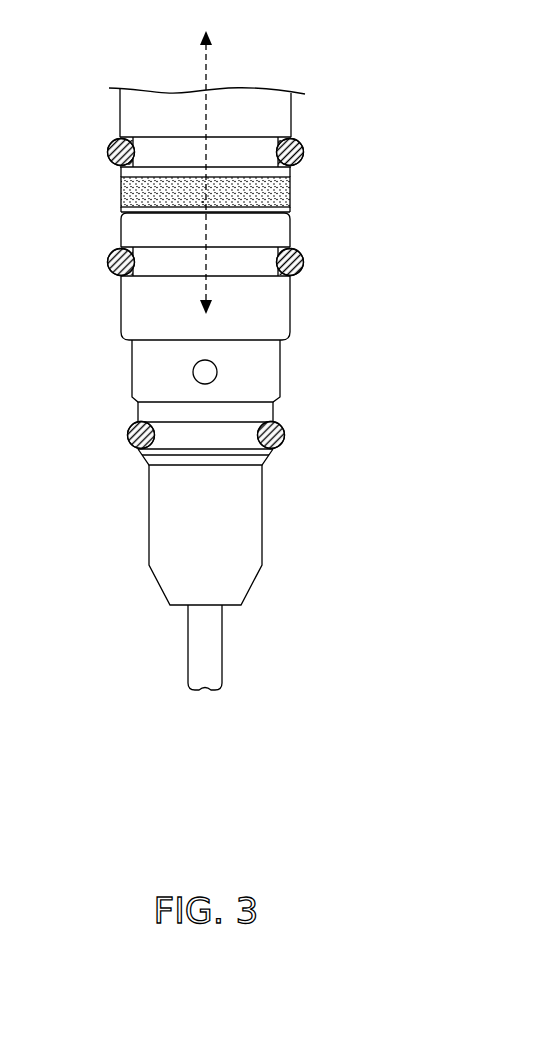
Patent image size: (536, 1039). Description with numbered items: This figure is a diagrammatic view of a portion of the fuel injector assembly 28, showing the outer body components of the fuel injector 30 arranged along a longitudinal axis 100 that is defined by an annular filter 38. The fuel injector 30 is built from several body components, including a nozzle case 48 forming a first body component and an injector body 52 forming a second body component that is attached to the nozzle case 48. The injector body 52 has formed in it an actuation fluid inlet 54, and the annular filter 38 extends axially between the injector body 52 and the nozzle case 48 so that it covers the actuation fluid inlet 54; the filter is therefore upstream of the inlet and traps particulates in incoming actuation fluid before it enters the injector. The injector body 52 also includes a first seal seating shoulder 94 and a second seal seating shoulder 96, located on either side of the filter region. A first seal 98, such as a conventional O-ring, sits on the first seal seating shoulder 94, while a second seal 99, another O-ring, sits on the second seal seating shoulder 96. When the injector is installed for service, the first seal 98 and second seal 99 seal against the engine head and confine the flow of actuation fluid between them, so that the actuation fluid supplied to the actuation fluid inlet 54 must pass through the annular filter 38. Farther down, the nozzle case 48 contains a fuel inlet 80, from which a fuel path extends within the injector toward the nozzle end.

The fuel injector assembly 28 is at (232, 360).
The fuel injector 30 is at (119, 108).
The annular filter 38 is at (291, 195).
The nozzle case 48 is at (262, 490).
The injector body 52 is at (209, 273).
The actuation fluid inlet 54 is at (203, 202).
The fuel inlet 80 is at (213, 378).
The first seal seating shoulder 94 is at (291, 168).
The second seal seating shoulder 96 is at (291, 230).
The first seal 98 is at (303, 143).
The second seal 99 is at (303, 262).
The longitudinal axis 100 is at (207, 70).